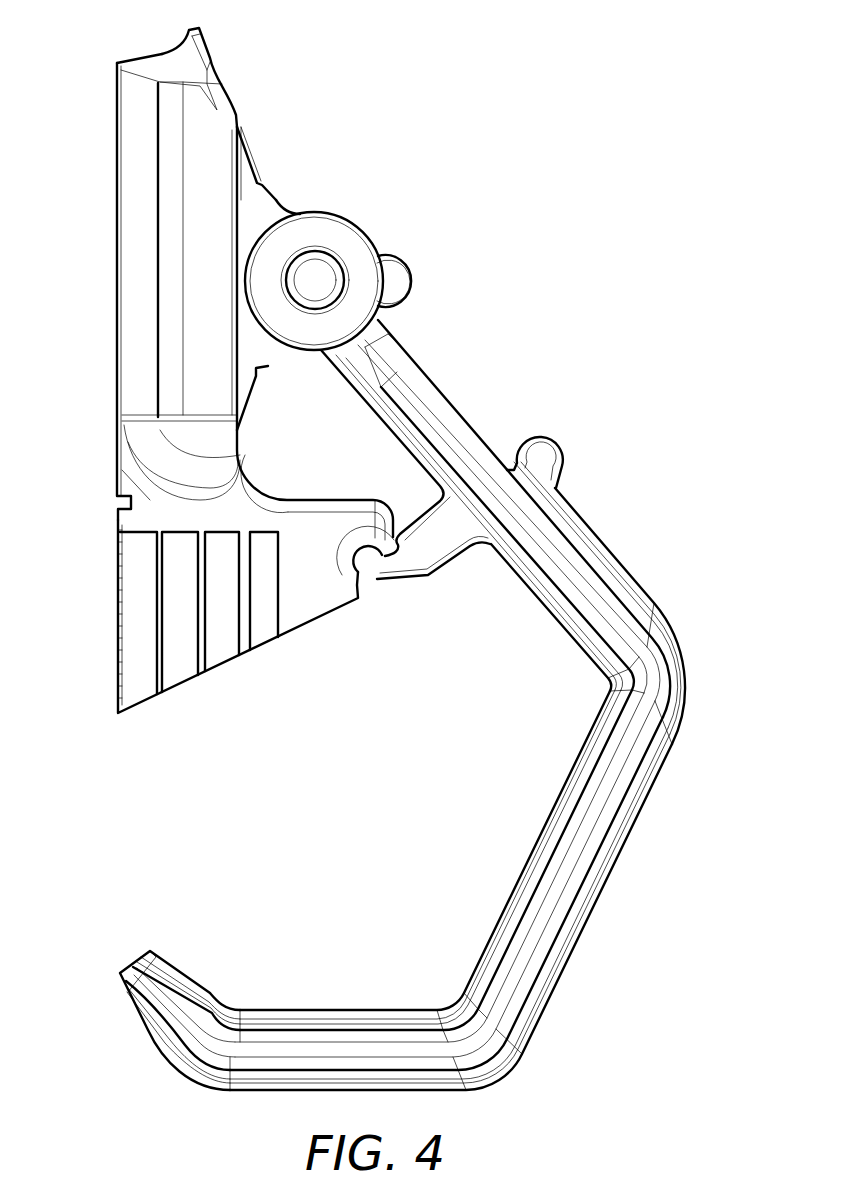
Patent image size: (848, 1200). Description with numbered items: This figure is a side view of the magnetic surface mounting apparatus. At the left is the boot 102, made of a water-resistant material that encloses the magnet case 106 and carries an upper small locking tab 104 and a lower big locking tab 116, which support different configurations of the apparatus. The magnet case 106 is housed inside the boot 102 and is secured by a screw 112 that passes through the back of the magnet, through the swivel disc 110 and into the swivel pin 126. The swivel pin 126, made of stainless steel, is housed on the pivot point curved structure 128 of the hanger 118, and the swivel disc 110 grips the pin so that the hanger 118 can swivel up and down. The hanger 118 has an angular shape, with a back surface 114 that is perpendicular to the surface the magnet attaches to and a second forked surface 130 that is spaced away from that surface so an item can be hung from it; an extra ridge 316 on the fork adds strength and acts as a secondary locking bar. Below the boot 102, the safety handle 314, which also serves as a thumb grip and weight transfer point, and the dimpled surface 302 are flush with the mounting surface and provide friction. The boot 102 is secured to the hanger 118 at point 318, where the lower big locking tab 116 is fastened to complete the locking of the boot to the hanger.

The boot 102 is at (130, 240).
The upper small locking tab 104 is at (207, 46).
The magnet case 106 is at (243, 153).
The swivel disc 110 is at (273, 203).
The screw 112 is at (408, 275).
The back surface 114 is at (618, 620).
The lower big locking tab 116 is at (558, 455).
The hanger 118 is at (603, 857).
The swivel pin 126 is at (313, 292).
The pivot point curved structure 128 is at (343, 237).
The second forked surface 130 is at (192, 990).
The dimpled surface 302 is at (120, 657).
The safety handle 314 is at (222, 653).
The extra ridge 316 is at (438, 555).
The locking point 318 is at (373, 568).